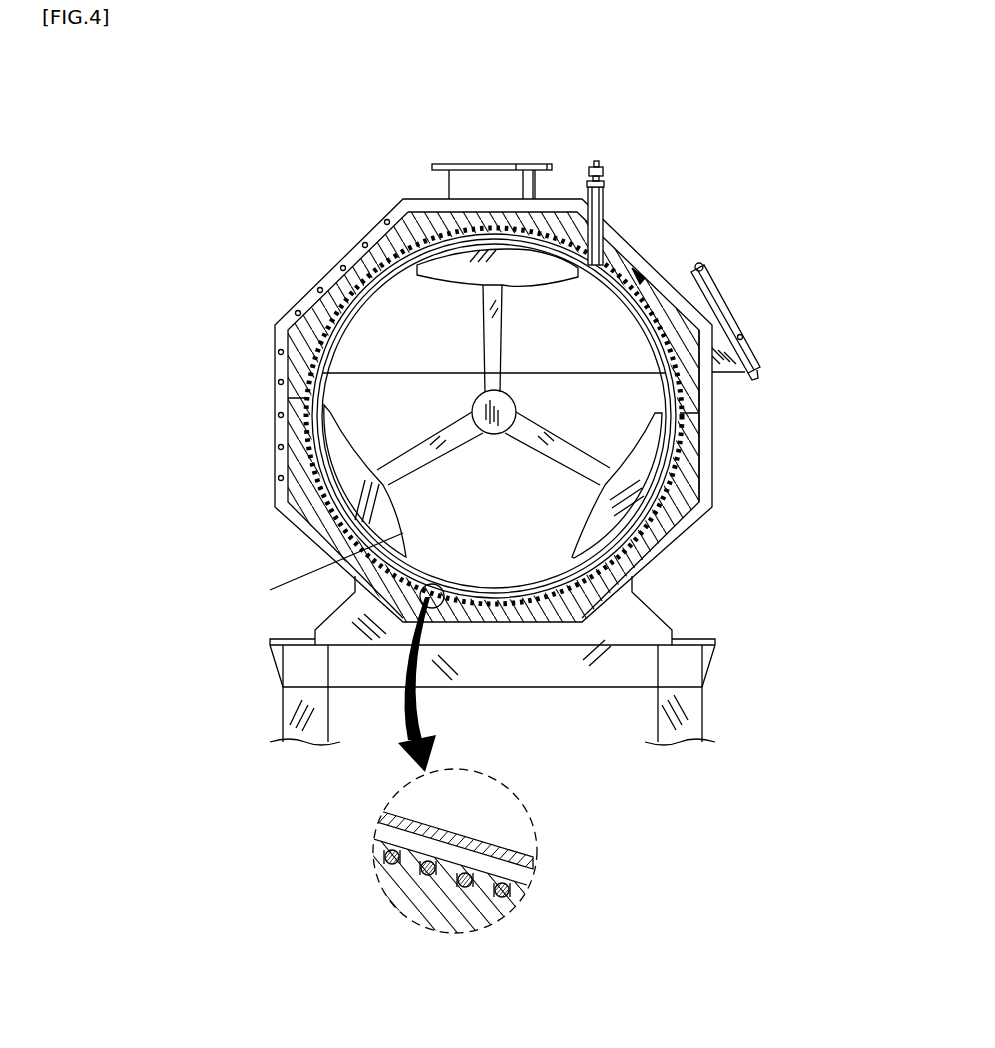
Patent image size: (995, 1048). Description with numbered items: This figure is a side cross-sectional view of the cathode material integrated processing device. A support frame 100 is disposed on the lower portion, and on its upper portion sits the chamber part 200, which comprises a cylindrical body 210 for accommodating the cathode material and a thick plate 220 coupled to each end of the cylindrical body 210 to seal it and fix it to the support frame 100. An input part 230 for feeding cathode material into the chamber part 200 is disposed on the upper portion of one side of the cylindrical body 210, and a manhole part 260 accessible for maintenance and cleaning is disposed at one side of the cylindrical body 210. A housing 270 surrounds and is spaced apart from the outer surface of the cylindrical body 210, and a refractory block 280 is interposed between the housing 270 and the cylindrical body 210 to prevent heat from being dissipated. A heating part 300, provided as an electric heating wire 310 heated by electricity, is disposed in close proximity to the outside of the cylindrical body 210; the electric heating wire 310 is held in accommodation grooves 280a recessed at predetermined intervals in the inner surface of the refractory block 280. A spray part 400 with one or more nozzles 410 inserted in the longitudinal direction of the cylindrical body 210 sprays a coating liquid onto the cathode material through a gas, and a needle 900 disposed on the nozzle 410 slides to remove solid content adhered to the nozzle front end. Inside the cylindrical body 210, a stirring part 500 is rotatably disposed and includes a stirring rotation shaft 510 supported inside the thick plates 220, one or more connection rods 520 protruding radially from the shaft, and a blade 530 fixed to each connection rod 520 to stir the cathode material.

The support frame 100 is at (718, 712).
The chamber part 200 is at (345, 135).
The cylindrical body 210 is at (377, 320).
The thick plate 220 is at (325, 282).
The input part 230 is at (488, 163).
The manhole part 260 is at (717, 305).
The housing 270 is at (700, 392).
The refractory block 280 is at (690, 462).
The accommodation grooves 280a is at (390, 857).
The heating part 300 is at (648, 272).
The electric heating wire 310 is at (622, 282).
The spray part 400 is at (607, 192).
The nozzle 410 is at (588, 170).
The stirring part 500 is at (170, 327).
The stirring rotation shaft 510 is at (470, 408).
The connection rod 520 is at (423, 440).
The blade 530 is at (345, 480).
The needle 900 is at (598, 163).